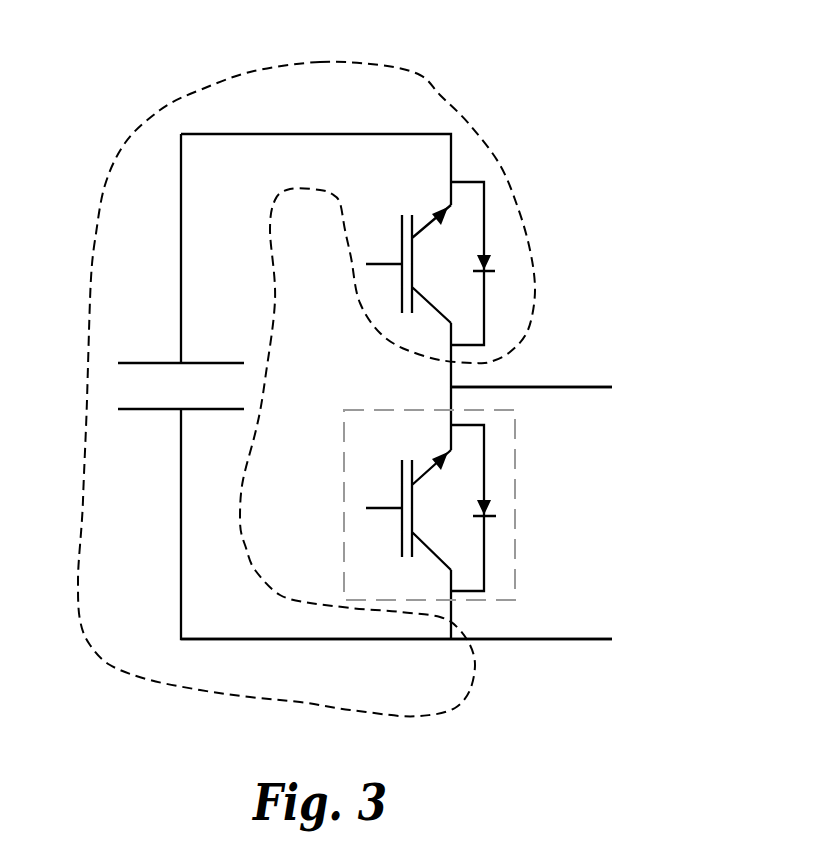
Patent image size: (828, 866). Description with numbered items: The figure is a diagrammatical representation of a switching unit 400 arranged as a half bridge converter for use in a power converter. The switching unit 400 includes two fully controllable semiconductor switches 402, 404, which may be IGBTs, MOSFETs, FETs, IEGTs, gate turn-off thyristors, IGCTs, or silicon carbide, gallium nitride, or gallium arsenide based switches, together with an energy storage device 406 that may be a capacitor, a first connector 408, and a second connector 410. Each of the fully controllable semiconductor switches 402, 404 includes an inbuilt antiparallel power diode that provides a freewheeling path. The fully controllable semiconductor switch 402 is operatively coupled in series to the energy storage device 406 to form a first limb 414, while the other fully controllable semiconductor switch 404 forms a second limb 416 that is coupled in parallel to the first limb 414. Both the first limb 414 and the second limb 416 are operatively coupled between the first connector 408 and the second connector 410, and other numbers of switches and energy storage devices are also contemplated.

The switching unit 400 is at (517, 68).
The fully controllable semiconductor switch 402 is at (402, 240).
The fully controllable semiconductor switch 404 is at (402, 470).
The energy storage device 406 is at (150, 362).
The first connector 408 is at (558, 387).
The second connector 410 is at (577, 639).
The first limb 414 is at (127, 143).
The second limb 416 is at (517, 452).